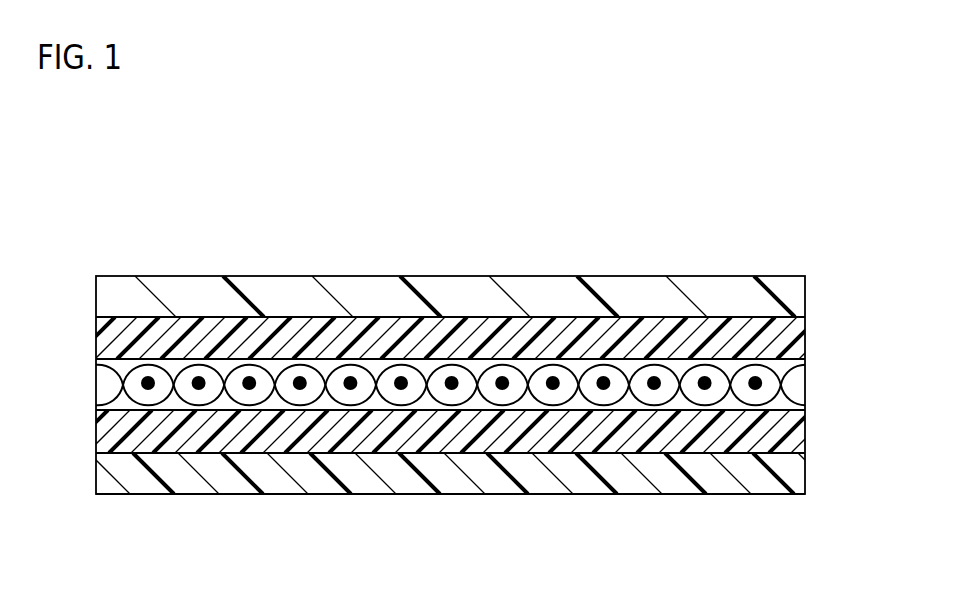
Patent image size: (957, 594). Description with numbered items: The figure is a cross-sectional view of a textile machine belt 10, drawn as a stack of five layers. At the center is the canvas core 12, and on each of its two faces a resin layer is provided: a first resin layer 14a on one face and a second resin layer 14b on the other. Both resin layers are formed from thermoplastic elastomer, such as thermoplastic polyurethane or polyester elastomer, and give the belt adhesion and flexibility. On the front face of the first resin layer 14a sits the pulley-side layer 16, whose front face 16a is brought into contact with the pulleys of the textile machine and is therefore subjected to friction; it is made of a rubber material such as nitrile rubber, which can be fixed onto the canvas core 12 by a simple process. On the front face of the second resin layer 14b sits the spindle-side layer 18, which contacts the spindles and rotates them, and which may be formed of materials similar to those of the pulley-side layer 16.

The textile machine belt 10 is at (497, 204).
The spindle-side layer 18 is at (793, 300).
The second resin layer 14b is at (797, 341).
The canvas core 12 is at (792, 388).
The first resin layer 14a is at (797, 433).
The pulley-side layer 16 is at (792, 476).
The front face 16a is at (453, 495).